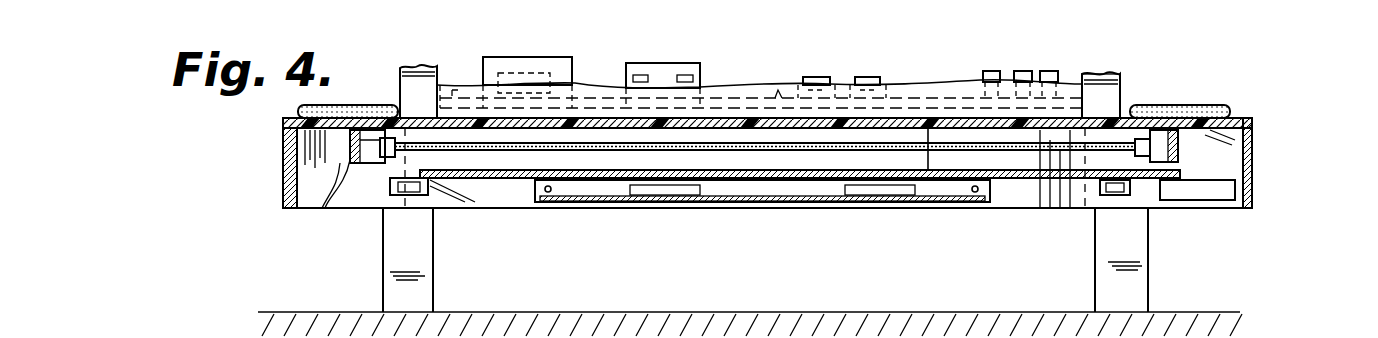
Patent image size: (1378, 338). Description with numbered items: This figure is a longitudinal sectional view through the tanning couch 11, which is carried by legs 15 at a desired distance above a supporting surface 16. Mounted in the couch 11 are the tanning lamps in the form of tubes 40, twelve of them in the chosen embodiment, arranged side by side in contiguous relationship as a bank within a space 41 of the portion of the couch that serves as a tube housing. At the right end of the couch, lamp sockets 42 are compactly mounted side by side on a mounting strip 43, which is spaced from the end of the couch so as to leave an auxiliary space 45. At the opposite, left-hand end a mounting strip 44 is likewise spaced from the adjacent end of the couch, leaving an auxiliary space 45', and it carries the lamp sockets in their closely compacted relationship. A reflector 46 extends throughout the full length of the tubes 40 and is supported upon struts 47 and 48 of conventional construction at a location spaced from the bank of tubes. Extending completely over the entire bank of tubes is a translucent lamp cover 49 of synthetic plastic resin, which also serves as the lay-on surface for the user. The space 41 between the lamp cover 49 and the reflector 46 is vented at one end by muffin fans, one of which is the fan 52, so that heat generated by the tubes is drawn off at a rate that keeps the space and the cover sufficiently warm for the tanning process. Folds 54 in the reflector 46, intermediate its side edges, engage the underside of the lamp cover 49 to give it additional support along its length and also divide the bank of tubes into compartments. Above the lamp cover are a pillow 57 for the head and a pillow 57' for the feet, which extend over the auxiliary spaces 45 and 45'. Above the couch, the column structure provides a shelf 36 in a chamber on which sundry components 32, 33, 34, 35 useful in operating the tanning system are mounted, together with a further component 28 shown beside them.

The couch 11 is at (268, 162).
The legs 15 is at (425, 288).
The supporting surface 16 is at (818, 312).
The component housing 28 is at (1085, 73).
The component 32 is at (560, 71).
The component 33 is at (670, 65).
The component 34 is at (815, 77).
The component 35 is at (983, 75).
The shelf 36 is at (780, 88).
The tubes 40 is at (806, 152).
The space 41 is at (606, 136).
The lamp sockets 42 is at (1160, 140).
The mounting strip 43 is at (1180, 142).
The mounting strip 44 is at (348, 170).
The auxiliary space 45 is at (1271, 163).
The auxiliary space 45' is at (278, 187).
The reflector 46 is at (366, 160).
The strut 47 is at (1100, 195).
The strut 48 is at (430, 187).
The lamp cover 49 is at (935, 180).
The muffin fan 52 is at (1215, 185).
The folds 54 is at (740, 160).
The pillow 57 is at (290, 114).
The pillow 57' is at (1198, 85).